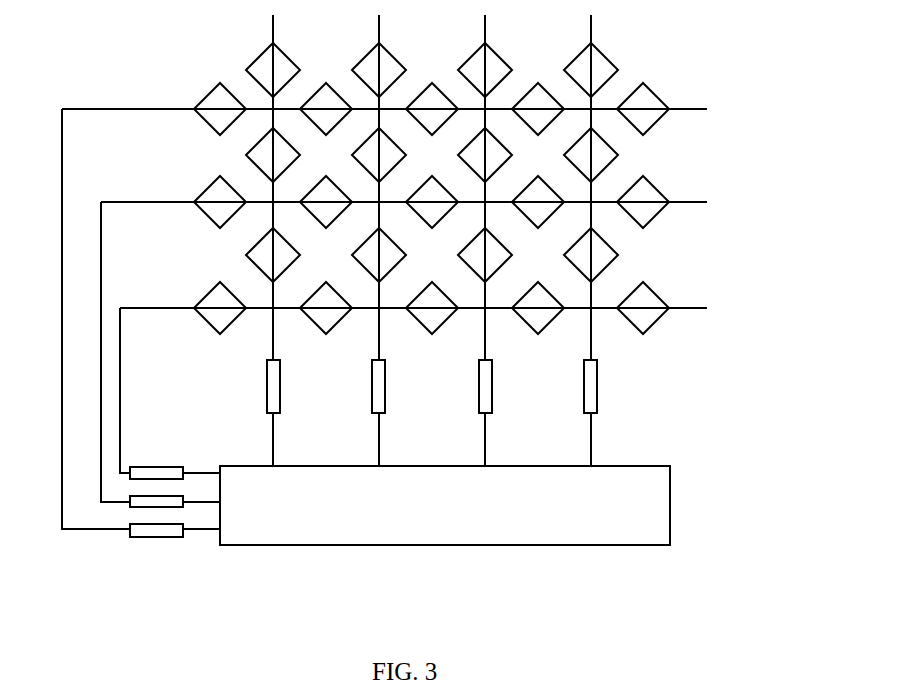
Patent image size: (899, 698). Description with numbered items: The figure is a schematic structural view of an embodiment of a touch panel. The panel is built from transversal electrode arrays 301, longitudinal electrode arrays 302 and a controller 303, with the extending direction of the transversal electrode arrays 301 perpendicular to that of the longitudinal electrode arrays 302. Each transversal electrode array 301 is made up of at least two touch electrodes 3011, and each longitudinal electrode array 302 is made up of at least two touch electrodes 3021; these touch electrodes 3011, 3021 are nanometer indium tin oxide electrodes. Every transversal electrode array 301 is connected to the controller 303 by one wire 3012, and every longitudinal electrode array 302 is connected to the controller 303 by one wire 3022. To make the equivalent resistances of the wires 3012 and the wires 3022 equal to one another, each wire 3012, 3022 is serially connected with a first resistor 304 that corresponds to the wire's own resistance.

The transversal electrode array 301 is at (685, 90).
The touch electrode 3011 is at (656, 188).
The wire 3012 is at (142, 108).
The longitudinal electrode array 302 is at (601, 44).
The touch electrode 3021 is at (607, 266).
The wire 3022 is at (272, 340).
The controller 303 is at (670, 520).
The first resistor 304 is at (282, 385).